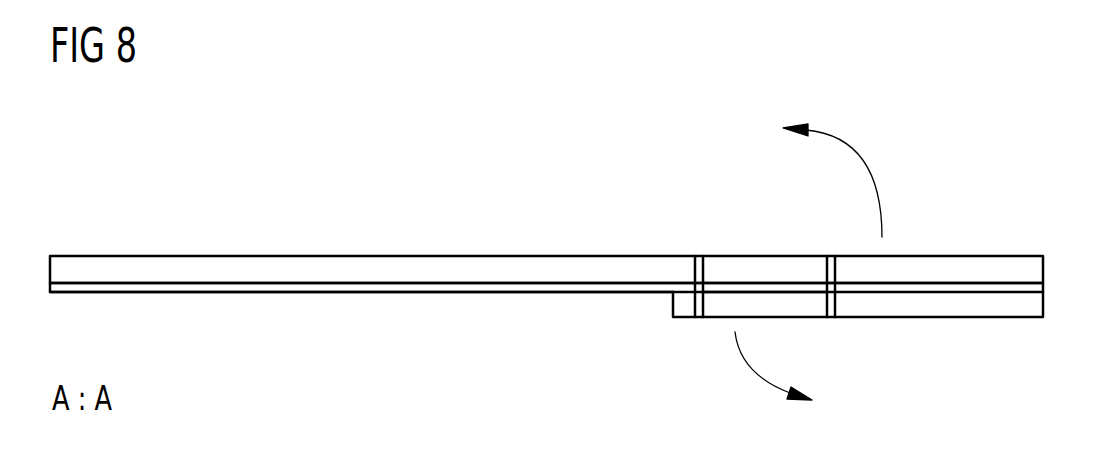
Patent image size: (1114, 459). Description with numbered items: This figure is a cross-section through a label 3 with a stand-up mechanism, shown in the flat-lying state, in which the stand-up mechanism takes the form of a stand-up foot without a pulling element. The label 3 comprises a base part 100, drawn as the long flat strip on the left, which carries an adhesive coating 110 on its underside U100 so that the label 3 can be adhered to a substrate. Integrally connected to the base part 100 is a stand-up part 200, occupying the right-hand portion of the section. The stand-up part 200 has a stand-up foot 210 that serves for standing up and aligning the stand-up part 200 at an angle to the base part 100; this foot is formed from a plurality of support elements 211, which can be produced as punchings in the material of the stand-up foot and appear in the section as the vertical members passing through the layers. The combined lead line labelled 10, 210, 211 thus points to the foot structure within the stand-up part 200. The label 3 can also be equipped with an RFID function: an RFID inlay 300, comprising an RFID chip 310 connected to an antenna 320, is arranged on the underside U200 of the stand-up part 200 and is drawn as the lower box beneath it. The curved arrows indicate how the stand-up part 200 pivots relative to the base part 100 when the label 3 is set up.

The label 3 is at (115, 133).
The base part 100 is at (364, 263).
The adhesive coating 110 is at (366, 287).
The underside of the base part U100 is at (493, 287).
The stand-up part 200 is at (957, 202).
The connecting element 10 is at (770, 257).
The stand-up foot 210 is at (770, 257).
The support element 211 is at (775, 233).
The underside of the stand-up part U200 is at (873, 286).
The RFID inlay 300 is at (865, 346).
The RFID chip 310 is at (865, 346).
The antenna 320 is at (963, 308).